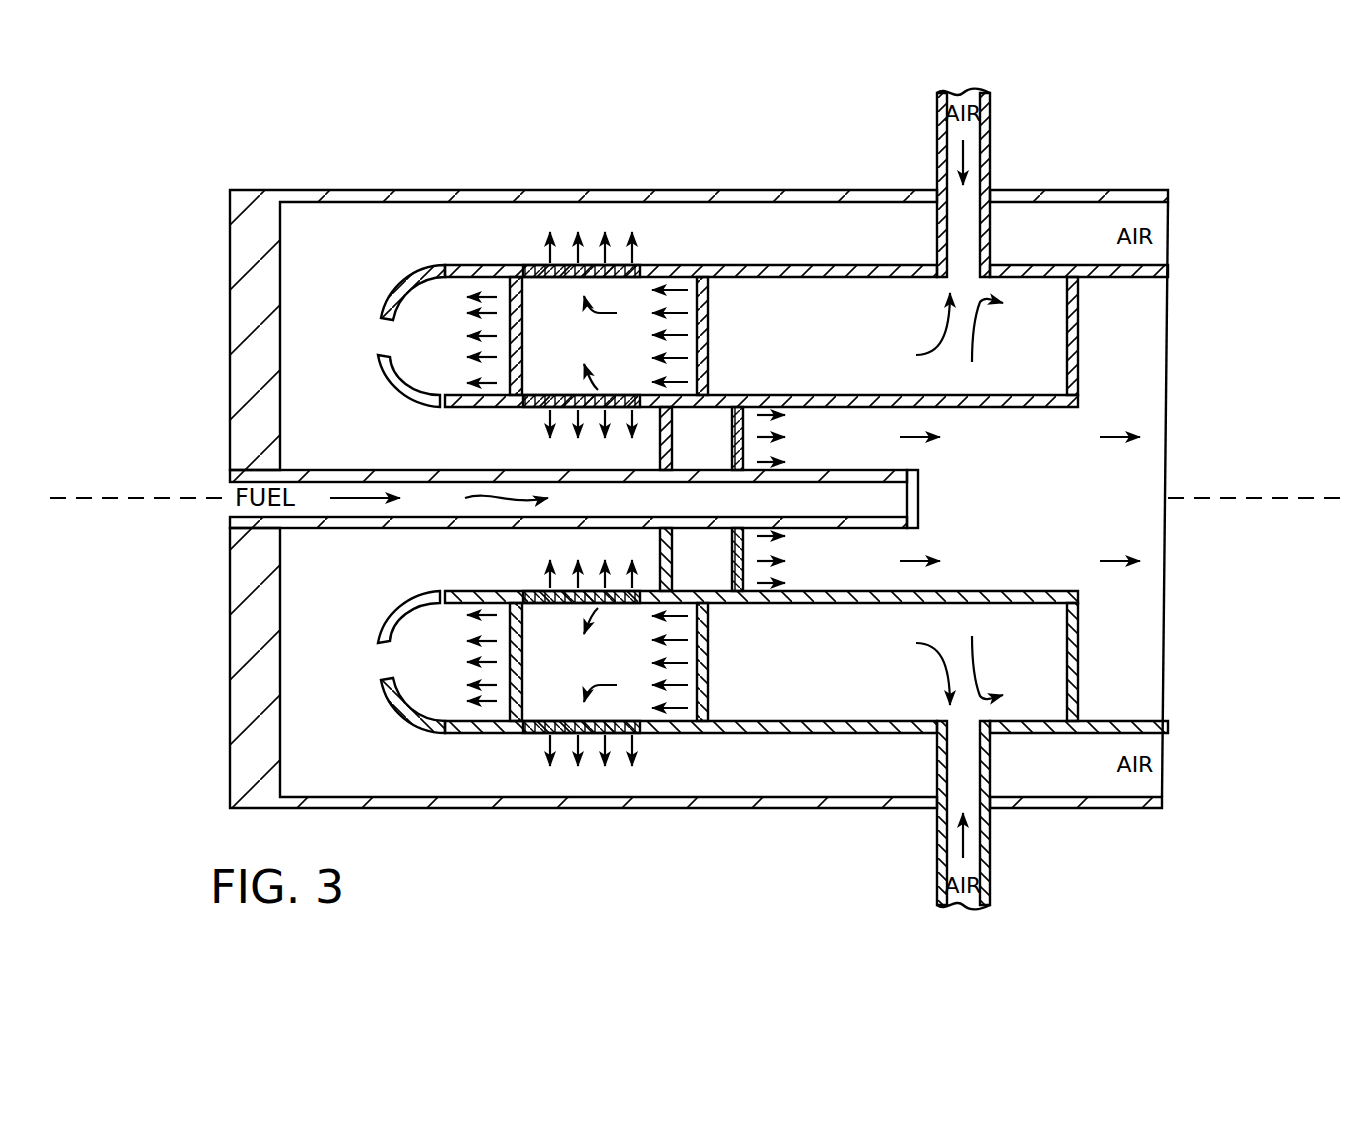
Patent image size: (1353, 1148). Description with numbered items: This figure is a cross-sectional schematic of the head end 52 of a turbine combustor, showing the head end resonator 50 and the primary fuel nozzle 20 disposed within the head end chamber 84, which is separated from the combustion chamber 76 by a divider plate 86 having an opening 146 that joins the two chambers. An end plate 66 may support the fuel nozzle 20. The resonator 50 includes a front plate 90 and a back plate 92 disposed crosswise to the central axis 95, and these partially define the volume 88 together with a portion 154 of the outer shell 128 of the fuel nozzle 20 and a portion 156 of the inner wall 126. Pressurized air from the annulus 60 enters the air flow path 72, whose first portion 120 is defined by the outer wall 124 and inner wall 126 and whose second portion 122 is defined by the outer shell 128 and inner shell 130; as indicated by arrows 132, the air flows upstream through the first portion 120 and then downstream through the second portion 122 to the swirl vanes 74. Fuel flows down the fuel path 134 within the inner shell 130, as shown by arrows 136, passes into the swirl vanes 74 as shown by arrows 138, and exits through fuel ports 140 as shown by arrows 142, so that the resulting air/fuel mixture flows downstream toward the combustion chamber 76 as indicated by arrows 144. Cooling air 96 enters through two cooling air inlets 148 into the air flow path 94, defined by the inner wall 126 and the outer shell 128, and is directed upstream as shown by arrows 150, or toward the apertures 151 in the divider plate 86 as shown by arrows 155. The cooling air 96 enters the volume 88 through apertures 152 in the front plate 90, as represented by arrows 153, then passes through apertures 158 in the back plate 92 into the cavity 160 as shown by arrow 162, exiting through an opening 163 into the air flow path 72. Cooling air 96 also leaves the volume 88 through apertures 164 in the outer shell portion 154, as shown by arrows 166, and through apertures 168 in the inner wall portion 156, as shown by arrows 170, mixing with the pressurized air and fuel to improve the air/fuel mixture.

The primary fuel nozzle 20 is at (770, 600).
The head end resonator 50 is at (640, 303).
The head end 52 is at (437, 122).
The annulus 60 is at (1160, 212).
The end plate 66 is at (240, 335).
The air flow path 72 is at (295, 255).
The swirl vanes 74 is at (693, 455).
The combustion chamber 76 is at (1106, 650).
The head end chamber 84 is at (305, 598).
The divider plate 86 is at (1082, 370).
The volume 88 is at (536, 353).
The front plate 90 is at (712, 352).
The back plate 92 is at (524, 381).
The air flow path 94 is at (986, 355).
The central axis 95 is at (1255, 496).
The cooling air 96 is at (963, 150).
The first portion 120 is at (492, 225).
The second portion 122 is at (305, 448).
The outer wall 124 is at (775, 190).
The inner wall 126 is at (828, 265).
The outer shell 128 is at (830, 408).
The inner shell 130 is at (848, 470).
The arrows 132 is at (1093, 180).
The fuel path 134 is at (574, 512).
The arrows 136 is at (439, 496).
The arrows 138 is at (668, 518).
The fuel ports 140 is at (738, 545).
The arrows 142 is at (790, 458).
The arrows 144 is at (940, 438).
The opening 146 is at (1068, 448).
The cooling air inlet 148 is at (990, 160).
The arrows 150 is at (911, 499).
The apertures 151 is at (1080, 292).
The apertures 152 is at (710, 285).
The arrows 153 is at (688, 358).
The portion 154 is at (661, 393).
The arrows 155 is at (975, 499).
The portion 156 is at (576, 498).
The apertures 158 is at (513, 304).
The cavity 160 is at (416, 320).
The arrow 162 is at (470, 383).
The opening 163 is at (410, 337).
The apertures 164 is at (540, 408).
The arrows 166 is at (632, 420).
The apertures 168 is at (522, 242).
The arrows 170 is at (605, 250).